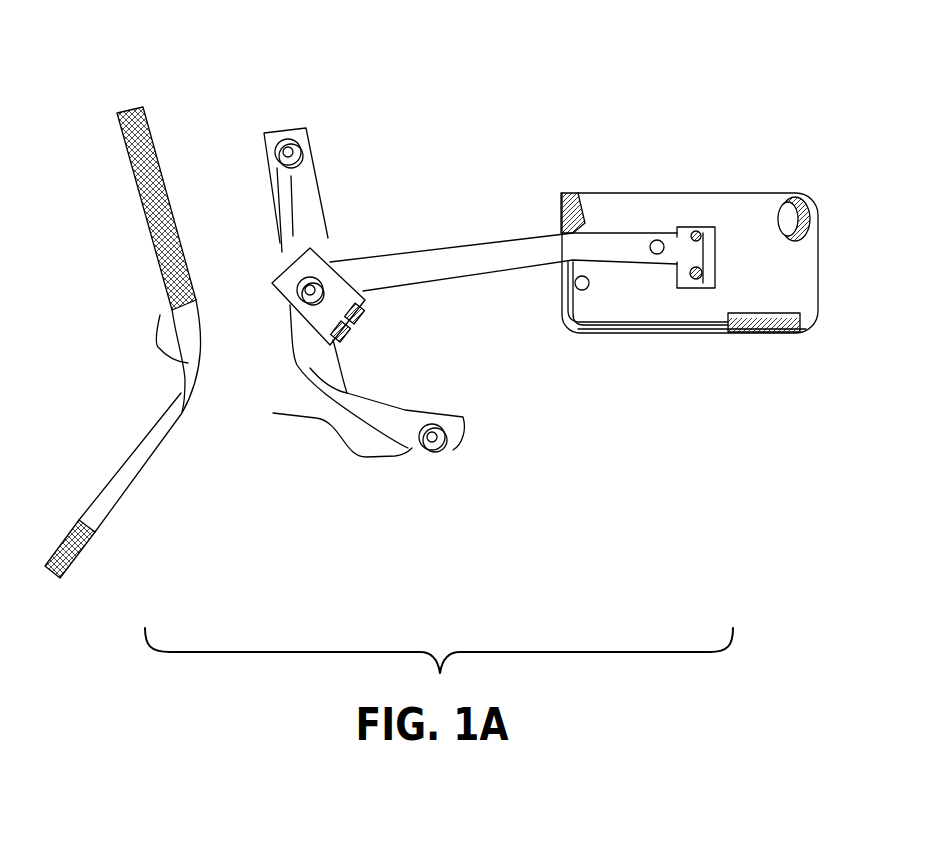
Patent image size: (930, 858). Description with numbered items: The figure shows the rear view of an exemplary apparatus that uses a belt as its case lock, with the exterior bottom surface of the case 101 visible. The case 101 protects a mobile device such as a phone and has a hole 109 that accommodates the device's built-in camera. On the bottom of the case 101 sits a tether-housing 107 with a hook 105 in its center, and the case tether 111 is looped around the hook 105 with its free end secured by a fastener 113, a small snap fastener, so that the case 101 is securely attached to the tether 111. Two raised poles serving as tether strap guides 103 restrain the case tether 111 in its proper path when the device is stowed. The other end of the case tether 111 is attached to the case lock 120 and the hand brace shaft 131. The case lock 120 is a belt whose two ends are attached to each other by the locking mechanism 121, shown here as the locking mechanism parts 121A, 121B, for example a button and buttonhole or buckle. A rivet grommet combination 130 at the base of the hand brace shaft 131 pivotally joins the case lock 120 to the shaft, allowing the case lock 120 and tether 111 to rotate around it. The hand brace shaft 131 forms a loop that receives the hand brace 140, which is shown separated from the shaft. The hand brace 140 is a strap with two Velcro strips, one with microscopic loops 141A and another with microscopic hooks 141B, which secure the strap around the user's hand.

The case 101 is at (700, 203).
The tether strap guides 103 is at (561, 193).
The hook 105 is at (706, 282).
The tether-housing 107 is at (677, 288).
The hole 109 is at (792, 198).
The case tether 111 is at (463, 257).
The fastener 113 is at (650, 240).
The case lock 120 is at (337, 373).
The locking mechanism 121 is at (278, 231).
The locking mechanism 121A is at (453, 450).
The locking mechanism 121B is at (286, 136).
The rivet grommet combination 130 is at (327, 243).
The hand brace shaft 131 is at (363, 308).
The hand brace 140 is at (160, 315).
The microscopic loops 141A is at (123, 108).
The microscopic hooks 141B is at (76, 528).